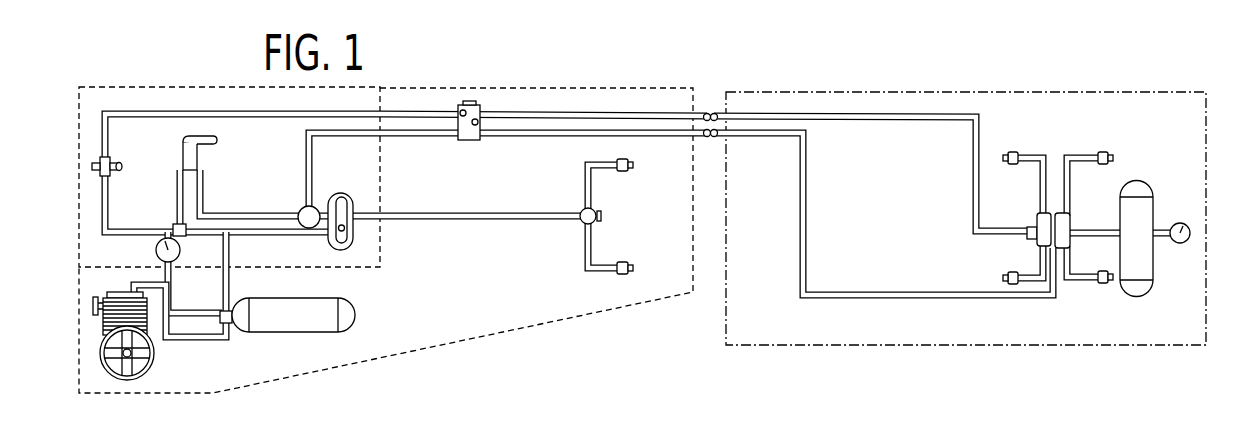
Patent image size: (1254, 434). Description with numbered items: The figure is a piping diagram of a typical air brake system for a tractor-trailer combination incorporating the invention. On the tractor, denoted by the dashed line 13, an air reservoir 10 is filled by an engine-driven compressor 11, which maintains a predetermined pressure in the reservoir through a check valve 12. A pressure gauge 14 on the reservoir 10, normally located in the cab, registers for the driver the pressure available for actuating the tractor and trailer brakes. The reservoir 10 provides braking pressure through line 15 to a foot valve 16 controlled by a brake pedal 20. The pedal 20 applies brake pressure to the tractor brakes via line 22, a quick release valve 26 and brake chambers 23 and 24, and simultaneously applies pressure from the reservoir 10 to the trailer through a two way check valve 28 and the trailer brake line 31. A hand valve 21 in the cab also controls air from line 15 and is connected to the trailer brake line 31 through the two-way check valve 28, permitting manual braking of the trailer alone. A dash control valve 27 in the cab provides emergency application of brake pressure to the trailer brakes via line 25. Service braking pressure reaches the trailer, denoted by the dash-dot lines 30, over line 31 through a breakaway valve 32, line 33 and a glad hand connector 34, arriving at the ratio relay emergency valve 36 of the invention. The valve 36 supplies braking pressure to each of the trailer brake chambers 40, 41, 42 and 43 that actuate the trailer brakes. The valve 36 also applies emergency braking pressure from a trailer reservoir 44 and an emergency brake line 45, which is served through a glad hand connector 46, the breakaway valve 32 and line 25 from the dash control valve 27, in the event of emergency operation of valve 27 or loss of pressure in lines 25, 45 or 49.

The air reservoir 10 is at (288, 299).
The compressor 11 is at (100, 324).
The check valve 12 is at (222, 313).
The tractor 13 is at (562, 318).
The pressure gauge 14 is at (156, 251).
The line 15 is at (230, 281).
The foot valve 16 is at (346, 247).
The brake pedal 20 is at (343, 196).
The hand valve 21 is at (201, 144).
The line 22 is at (460, 216).
The brake chamber 23 is at (628, 161).
The brake chamber 24 is at (633, 266).
The line 25 is at (185, 112).
The quick release valve 26 is at (582, 211).
The dash control valve 27 is at (100, 163).
The two way check valve 28 is at (299, 211).
The trailer 30 is at (1087, 92).
The trailer brake line 31 is at (424, 138).
The breakaway valve 32 is at (468, 103).
The line 33 is at (527, 131).
The glad hand connector 34 is at (712, 138).
The ratio relay emergency valve 36 is at (1036, 226).
The brake chamber 40 is at (1012, 155).
The brake chamber 41 is at (1106, 156).
The brake chamber 42 is at (1003, 279).
The brake chamber 43 is at (1100, 282).
The trailer reservoir 44 is at (1142, 188).
The emergency brake line 45 is at (882, 113).
The glad hand connector 46 is at (708, 110).
The line 49 is at (616, 112).